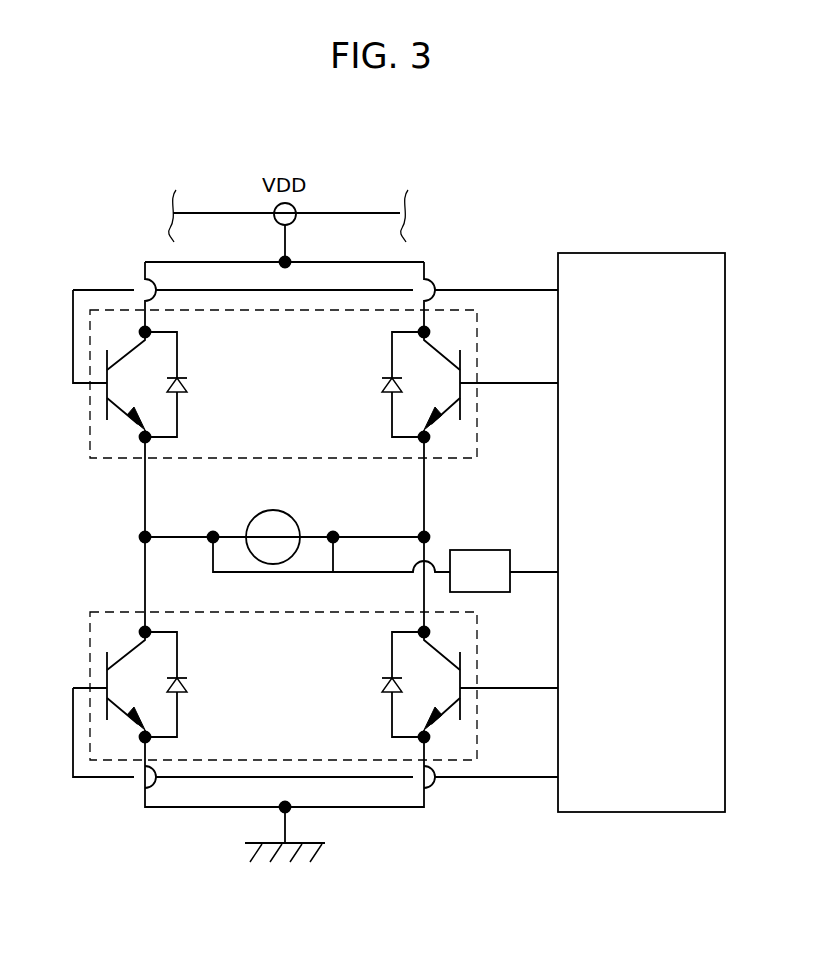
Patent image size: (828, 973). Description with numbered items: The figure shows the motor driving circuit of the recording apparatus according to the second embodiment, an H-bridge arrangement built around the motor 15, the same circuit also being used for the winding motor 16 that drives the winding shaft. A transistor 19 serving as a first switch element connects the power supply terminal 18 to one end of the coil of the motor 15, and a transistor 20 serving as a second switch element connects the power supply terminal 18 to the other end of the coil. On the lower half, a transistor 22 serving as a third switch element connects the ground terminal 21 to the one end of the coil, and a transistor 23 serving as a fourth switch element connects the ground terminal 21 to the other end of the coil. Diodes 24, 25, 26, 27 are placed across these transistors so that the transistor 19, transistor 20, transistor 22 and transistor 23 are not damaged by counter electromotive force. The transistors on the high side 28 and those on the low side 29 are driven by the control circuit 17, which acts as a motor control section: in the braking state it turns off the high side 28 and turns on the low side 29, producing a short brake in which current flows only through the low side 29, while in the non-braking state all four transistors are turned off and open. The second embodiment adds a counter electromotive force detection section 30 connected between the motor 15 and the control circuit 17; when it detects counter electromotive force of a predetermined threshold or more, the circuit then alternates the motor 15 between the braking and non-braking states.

The motor 15 is at (299, 519).
The winding motor 16 is at (290, 512).
The control circuit 17 is at (657, 253).
The power supply terminal 18 is at (290, 255).
The transistor 19 is at (105, 402).
The transistor 20 is at (462, 365).
The ground terminal 21 is at (290, 812).
The transistor 22 is at (105, 662).
The transistor 23 is at (462, 665).
The diode 24 is at (192, 385).
The diode 25 is at (375, 385).
The diode 26 is at (192, 685).
The diode 27 is at (375, 685).
The high side 28 is at (223, 460).
The low side 29 is at (120, 610).
The counter electromotive force detection section 30 is at (480, 550).